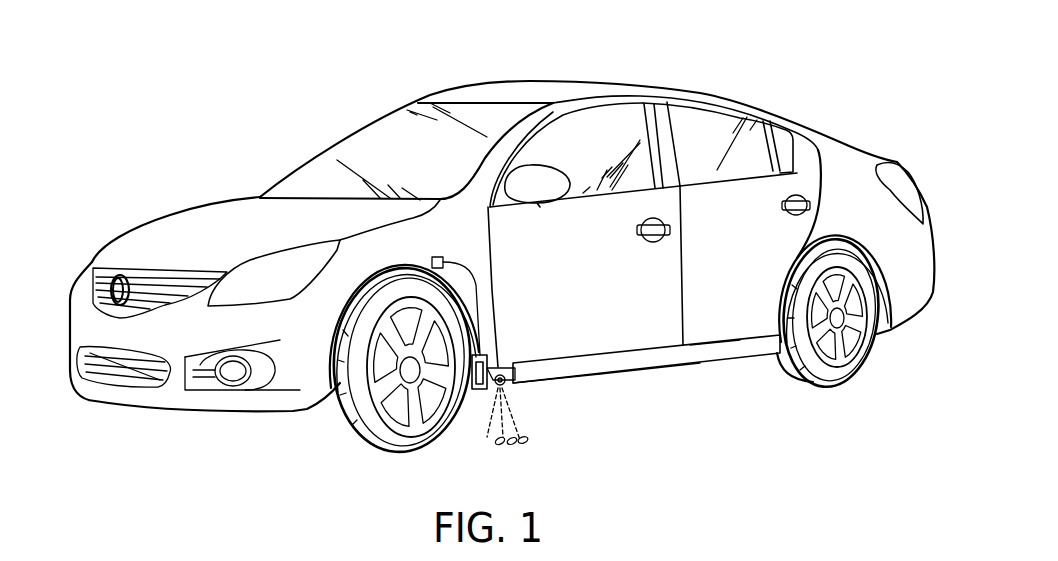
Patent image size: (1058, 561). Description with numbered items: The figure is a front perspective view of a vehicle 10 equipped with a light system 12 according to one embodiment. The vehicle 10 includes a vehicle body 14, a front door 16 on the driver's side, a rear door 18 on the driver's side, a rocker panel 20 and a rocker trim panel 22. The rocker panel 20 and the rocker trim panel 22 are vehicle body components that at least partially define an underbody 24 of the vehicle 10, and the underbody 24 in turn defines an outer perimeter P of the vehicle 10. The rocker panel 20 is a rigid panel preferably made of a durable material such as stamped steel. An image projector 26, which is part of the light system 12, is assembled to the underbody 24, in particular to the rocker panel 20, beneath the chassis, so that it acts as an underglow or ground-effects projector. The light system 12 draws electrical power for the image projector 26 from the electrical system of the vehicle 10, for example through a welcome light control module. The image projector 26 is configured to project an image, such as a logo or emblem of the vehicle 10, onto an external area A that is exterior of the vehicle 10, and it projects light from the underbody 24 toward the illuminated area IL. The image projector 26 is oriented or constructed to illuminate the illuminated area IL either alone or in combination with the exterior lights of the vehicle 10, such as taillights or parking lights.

The vehicle 10 is at (702, 58).
The vehicle body 14 is at (777, 101).
The front door 16 is at (538, 248).
The rear door 18 is at (772, 244).
The light system 12 is at (474, 402).
The image projector 26 is at (511, 352).
The illuminated area IL is at (517, 455).
The rocker trim panel 22 is at (655, 357).
The rocker panel 20 is at (548, 395).
The underbody 24 is at (609, 382).
The outer perimeter P is at (714, 358).
The external area A is at (735, 413).